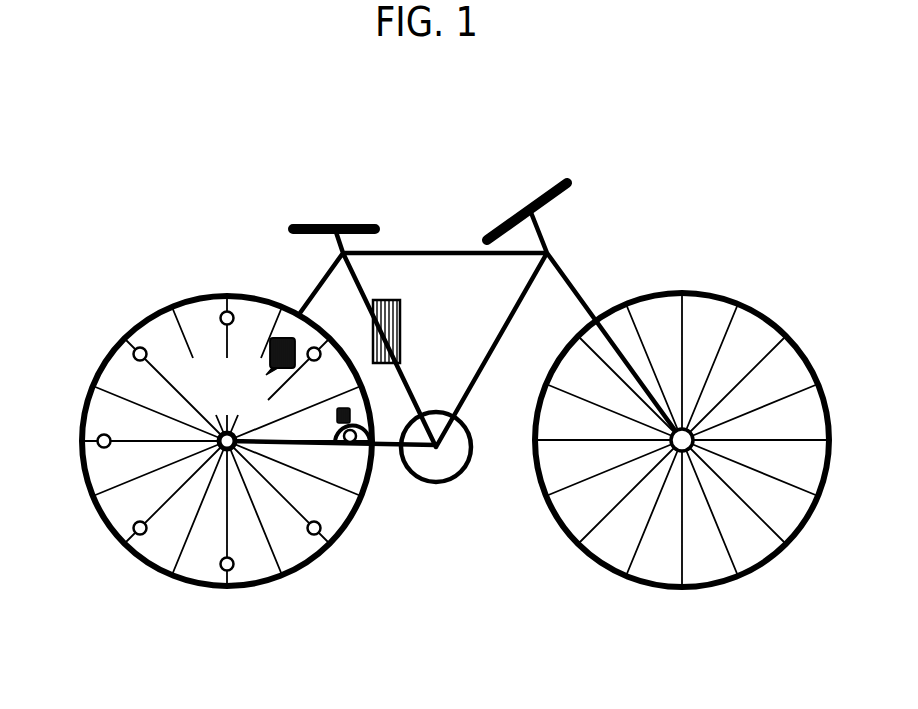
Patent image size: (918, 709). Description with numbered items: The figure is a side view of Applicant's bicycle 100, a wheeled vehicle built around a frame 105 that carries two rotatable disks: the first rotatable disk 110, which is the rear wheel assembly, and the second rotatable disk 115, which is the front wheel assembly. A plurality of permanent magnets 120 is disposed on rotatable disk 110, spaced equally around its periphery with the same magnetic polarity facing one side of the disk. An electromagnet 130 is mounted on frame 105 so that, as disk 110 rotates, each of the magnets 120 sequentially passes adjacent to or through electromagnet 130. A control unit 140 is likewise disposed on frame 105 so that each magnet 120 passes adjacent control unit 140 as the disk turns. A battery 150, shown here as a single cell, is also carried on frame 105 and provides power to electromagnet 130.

The bicycle 100 is at (680, 611).
The frame 105 is at (454, 231).
The first rotatable disk 110 is at (225, 610).
The second rotatable disk 115 is at (786, 549).
The permanent magnets 120 is at (82, 455).
The electromagnet 130 is at (267, 340).
The control unit 140 is at (377, 450).
The battery 150 is at (398, 335).